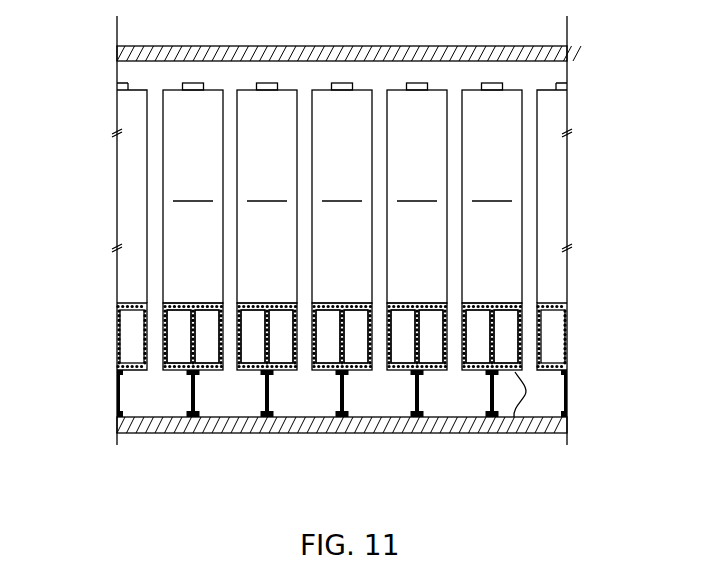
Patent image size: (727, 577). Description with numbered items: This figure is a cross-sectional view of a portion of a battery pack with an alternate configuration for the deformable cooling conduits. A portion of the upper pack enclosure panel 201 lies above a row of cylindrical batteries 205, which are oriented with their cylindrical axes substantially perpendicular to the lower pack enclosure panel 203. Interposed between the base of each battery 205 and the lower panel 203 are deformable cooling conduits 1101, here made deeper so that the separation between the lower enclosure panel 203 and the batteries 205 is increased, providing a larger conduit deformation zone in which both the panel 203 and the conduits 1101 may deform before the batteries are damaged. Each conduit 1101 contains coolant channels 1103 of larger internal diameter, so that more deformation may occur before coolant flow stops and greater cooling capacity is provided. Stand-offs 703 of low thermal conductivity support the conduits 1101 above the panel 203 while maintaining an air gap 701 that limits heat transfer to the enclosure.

The upper pack enclosure panel 201 is at (237, 46).
The lower pack enclosure panel 203 is at (355, 428).
The batteries 205 is at (342, 193).
The air gap 701 is at (527, 392).
The stand-offs 703 is at (337, 396).
The conduits 1101 is at (252, 371).
The channels 1103 is at (433, 358).